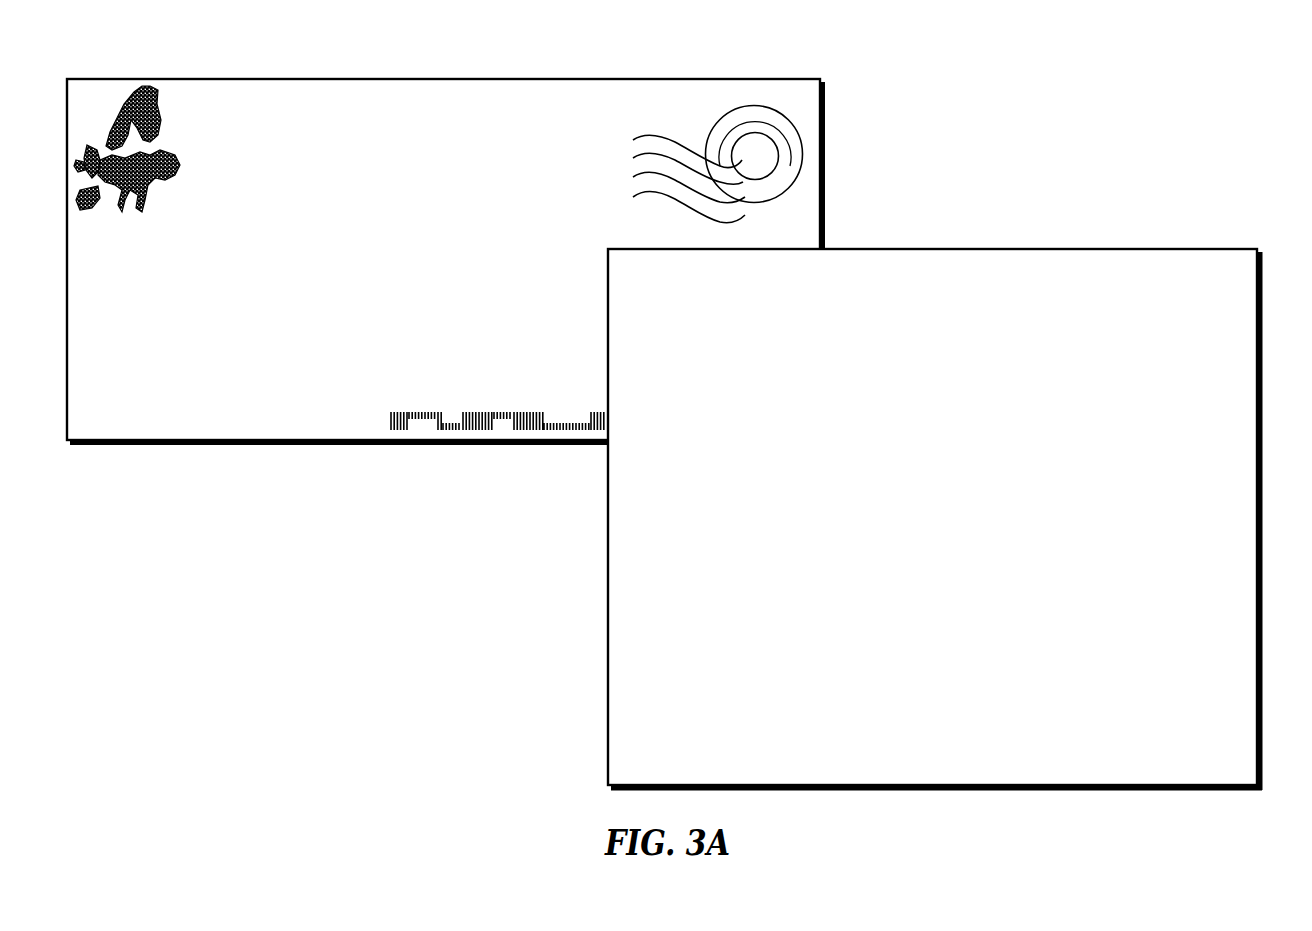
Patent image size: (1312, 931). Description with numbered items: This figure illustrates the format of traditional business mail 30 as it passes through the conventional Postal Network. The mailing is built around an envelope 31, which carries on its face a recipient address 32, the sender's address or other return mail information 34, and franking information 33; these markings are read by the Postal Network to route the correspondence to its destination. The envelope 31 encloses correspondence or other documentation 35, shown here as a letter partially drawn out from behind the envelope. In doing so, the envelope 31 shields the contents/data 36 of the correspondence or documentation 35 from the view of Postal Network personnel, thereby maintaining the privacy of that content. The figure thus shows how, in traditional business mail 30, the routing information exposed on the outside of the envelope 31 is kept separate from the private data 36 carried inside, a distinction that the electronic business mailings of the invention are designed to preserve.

The traditional business mail 30 is at (1066, 112).
The envelope 31 is at (513, 118).
The recipient address 32 is at (384, 310).
The franking information 33 is at (767, 152).
The sender's address or other return mail information 34 is at (124, 106).
The correspondence or other documentation 35 is at (857, 412).
The contents/data of the correspondence 36 is at (1152, 543).